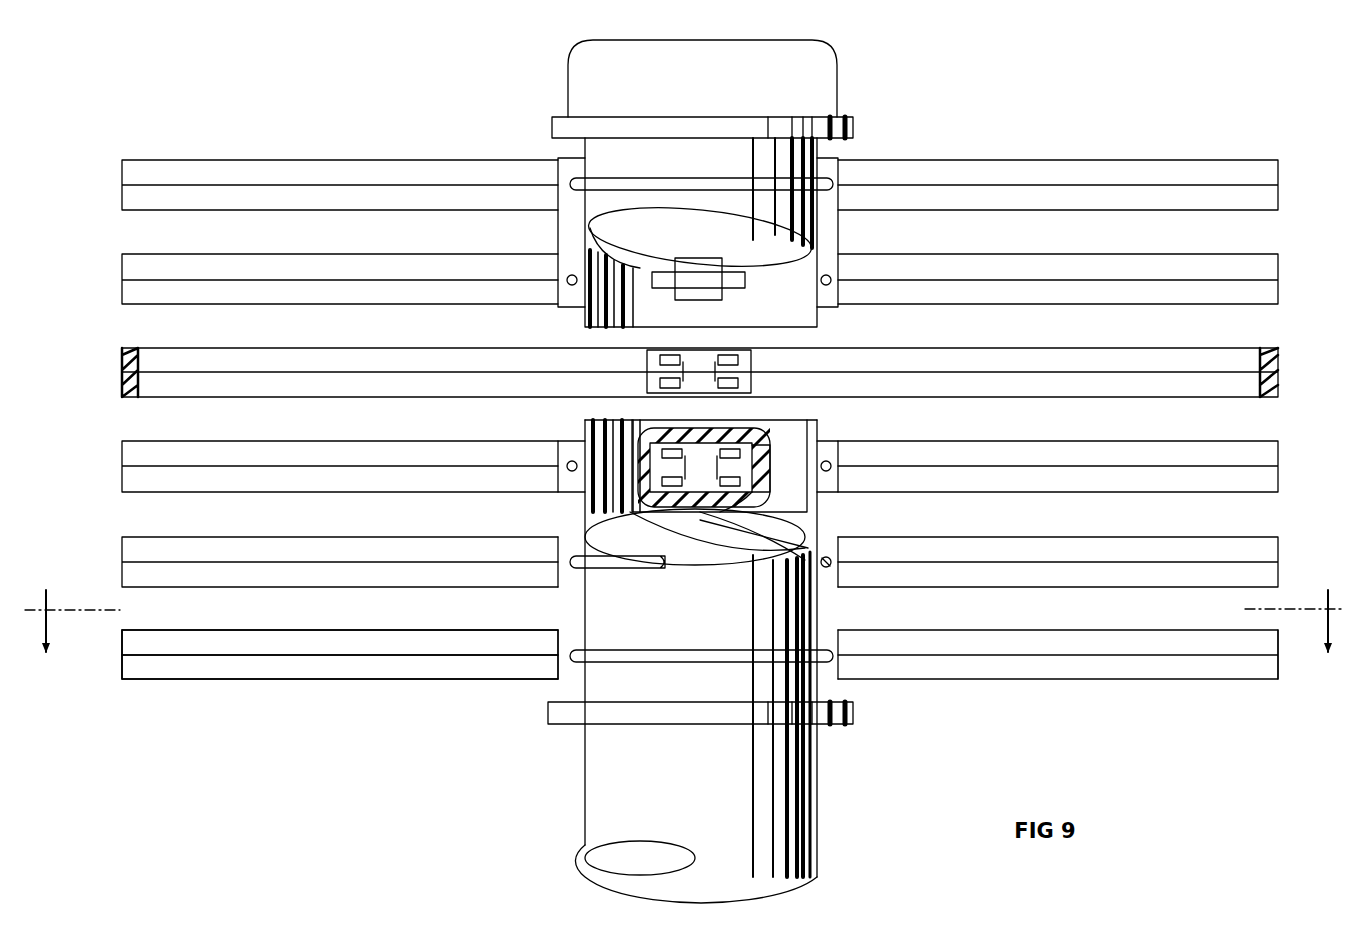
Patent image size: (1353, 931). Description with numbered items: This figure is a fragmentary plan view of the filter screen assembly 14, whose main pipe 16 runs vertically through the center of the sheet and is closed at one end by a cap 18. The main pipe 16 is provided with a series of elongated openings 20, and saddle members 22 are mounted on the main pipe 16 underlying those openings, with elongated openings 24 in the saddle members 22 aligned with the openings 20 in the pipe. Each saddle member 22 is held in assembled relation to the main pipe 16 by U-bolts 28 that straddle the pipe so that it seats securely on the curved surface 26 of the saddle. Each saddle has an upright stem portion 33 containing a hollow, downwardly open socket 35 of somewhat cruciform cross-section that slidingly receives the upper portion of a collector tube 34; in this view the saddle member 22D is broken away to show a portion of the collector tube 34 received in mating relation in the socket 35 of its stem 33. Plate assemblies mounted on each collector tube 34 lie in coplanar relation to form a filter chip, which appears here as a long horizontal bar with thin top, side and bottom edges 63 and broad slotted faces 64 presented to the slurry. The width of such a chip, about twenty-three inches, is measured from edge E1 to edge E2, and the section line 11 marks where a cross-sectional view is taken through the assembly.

The section line 11— 11 is at (684, 618).
The filter screen assembly 14 is at (340, 690).
The main pipe 16 is at (632, 244).
The cap 18 is at (702, 92).
The elongated openings 20 is at (700, 262).
The saddle member 22 is at (578, 312).
The saddle member 22D is at (572, 490).
The elongated openings 24 is at (700, 295).
The curved surface 26 is at (783, 312).
The U-bolt 28 is at (712, 180).
The stem portion 33 is at (748, 497).
The collector tube 34 is at (648, 360).
The socket 35 is at (770, 478).
The edges 63 is at (118, 643).
The slotted faces 64 is at (230, 630).
The edge E1 is at (122, 672).
The edge E2 is at (1278, 672).